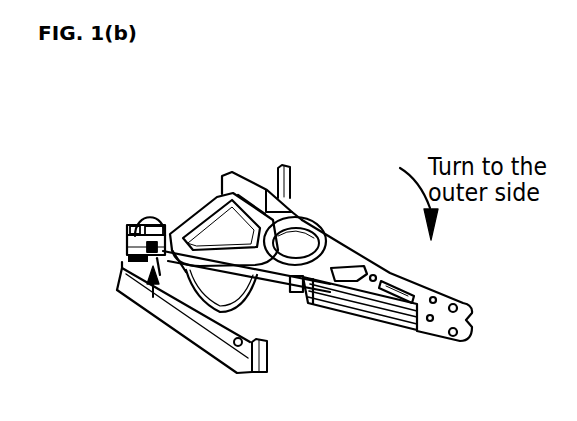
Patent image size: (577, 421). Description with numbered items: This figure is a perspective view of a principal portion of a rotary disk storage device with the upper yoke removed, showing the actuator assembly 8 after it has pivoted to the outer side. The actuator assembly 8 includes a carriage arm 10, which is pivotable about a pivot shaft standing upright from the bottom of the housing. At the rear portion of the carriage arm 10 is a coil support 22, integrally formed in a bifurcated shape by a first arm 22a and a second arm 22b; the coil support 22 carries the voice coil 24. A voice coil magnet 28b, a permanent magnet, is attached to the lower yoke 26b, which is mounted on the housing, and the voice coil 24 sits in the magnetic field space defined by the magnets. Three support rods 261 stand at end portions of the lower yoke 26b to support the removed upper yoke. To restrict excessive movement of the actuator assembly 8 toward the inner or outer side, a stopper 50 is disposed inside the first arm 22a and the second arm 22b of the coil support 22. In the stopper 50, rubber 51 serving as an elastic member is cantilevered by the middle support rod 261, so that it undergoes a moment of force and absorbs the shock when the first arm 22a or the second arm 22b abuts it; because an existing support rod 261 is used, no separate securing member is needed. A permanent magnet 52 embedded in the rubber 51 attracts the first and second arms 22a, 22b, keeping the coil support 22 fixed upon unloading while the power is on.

The actuator assembly 8 is at (362, 328).
The carriage arm 10 is at (352, 250).
The coil support 22 is at (183, 189).
The first arm 22a is at (127, 252).
The second arm 22b is at (232, 193).
The voice coil 24 is at (202, 195).
The lower yoke 26b is at (212, 328).
The voice coil magnet 28b is at (237, 292).
The stopper 50 is at (127, 238).
The rubber 51 is at (130, 231).
The permanent magnet 52 is at (150, 220).
The support rod 261 is at (292, 188).